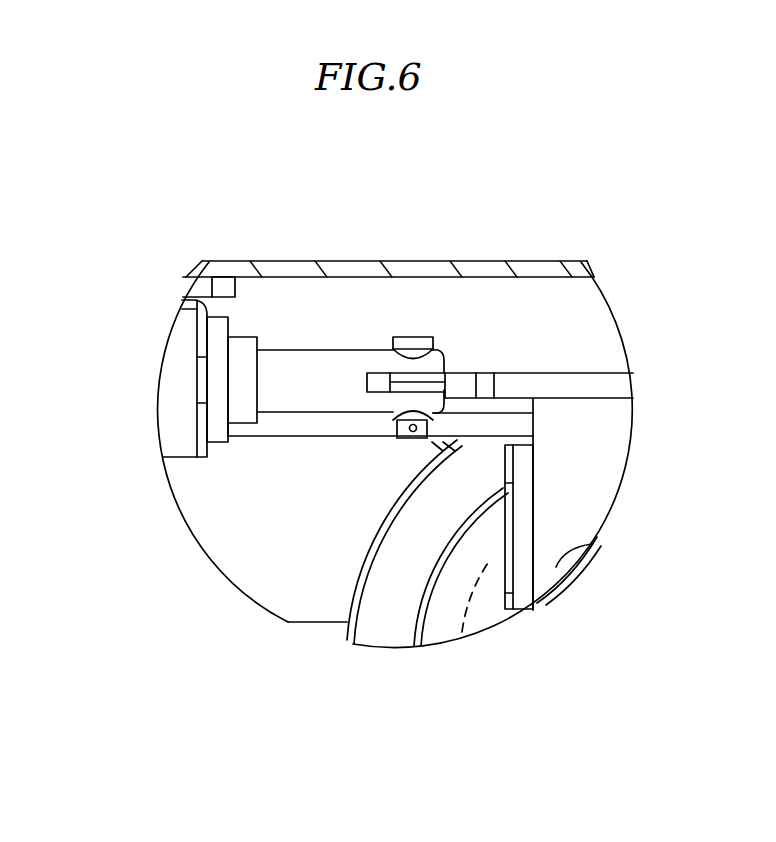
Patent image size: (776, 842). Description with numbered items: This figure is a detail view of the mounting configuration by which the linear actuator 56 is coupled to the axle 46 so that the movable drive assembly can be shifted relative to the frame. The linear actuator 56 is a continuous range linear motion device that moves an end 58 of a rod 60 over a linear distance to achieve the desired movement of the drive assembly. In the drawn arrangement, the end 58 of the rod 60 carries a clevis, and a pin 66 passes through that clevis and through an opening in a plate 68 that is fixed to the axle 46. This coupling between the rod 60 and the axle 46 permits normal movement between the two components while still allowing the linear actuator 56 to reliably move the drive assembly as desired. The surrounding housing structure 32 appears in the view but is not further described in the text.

The housing 32 is at (775, 237).
The axle 46 is at (575, 484).
The linear actuator 56 is at (178, 437).
The end of the rod 58 is at (423, 328).
The rod 60 is at (305, 387).
The pin 66 is at (400, 338).
The plate 68 is at (592, 385).